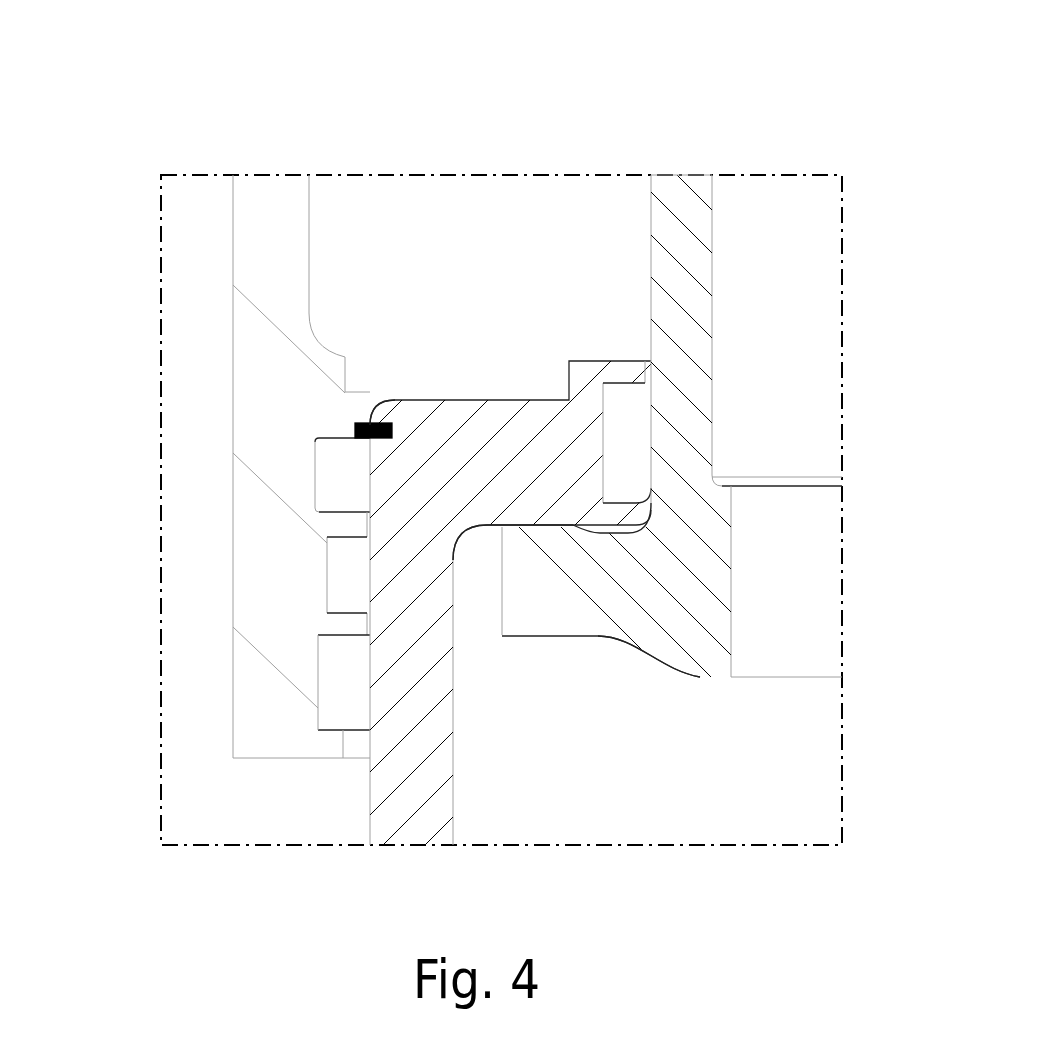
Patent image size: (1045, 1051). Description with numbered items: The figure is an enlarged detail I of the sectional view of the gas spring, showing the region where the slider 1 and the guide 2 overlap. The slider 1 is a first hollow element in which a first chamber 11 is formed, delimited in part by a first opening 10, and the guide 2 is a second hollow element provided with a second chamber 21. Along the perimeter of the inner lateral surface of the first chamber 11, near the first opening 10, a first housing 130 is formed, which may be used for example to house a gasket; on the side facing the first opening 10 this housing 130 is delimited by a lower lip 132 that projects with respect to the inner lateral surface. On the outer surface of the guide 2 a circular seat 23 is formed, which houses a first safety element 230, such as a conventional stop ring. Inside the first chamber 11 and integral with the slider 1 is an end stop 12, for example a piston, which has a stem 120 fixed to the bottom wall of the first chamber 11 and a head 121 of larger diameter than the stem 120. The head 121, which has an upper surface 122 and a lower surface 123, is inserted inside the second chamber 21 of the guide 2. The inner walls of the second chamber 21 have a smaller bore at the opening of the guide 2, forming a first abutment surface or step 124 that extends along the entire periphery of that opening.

The detail region I is at (208, 175).
The slider 1 is at (263, 285).
The first opening 10 is at (365, 763).
The first chamber 11 is at (446, 232).
The end stop 12 is at (651, 211).
The stem 120 is at (685, 257).
The head 121 is at (567, 598).
The upper surface 122 is at (680, 675).
The lower surface 123 is at (533, 523).
The step 124 is at (632, 510).
The first housing 130 is at (330, 482).
The lower lip 132 is at (343, 512).
The guide 2 is at (385, 818).
The second chamber 21 is at (802, 799).
The circular seat 23 is at (370, 413).
The first safety element 230 is at (355, 430).